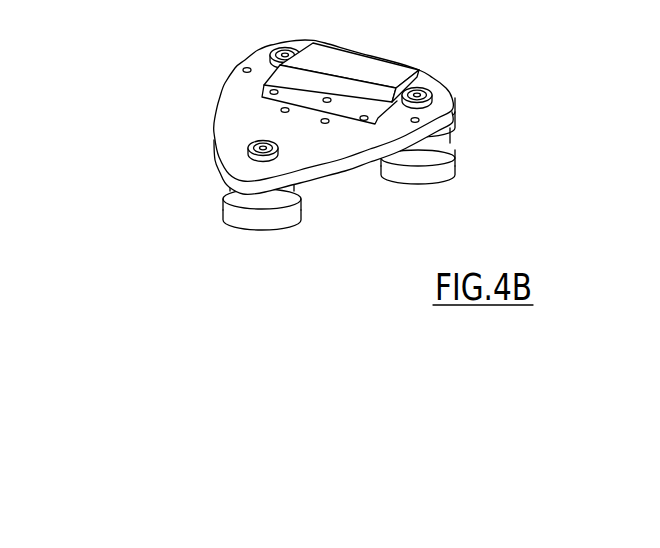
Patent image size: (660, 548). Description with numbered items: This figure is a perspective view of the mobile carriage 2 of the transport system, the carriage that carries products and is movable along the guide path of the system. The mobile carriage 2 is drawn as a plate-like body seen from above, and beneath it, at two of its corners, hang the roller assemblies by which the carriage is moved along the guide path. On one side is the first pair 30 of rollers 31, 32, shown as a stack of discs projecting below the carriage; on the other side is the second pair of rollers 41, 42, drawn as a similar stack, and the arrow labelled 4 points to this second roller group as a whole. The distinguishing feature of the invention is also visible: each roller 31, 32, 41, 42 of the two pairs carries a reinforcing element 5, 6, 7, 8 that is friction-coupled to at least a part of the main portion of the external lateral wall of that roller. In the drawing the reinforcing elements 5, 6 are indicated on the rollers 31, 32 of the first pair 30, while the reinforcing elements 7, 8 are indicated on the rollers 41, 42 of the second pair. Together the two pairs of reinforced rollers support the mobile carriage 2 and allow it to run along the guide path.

The mobile carriage 2 is at (357, 182).
The right damper assembly 4 is at (472, 130).
The reinforcing element 5 is at (227, 192).
The reinforcing element 6 is at (262, 233).
The reinforcing element 7 is at (456, 138).
The reinforcing element 8 is at (418, 185).
The first pair of rollers 30 is at (199, 229).
The roller 31 is at (224, 202).
The roller 32 is at (237, 210).
The roller 41 is at (453, 145).
The roller 42 is at (456, 170).